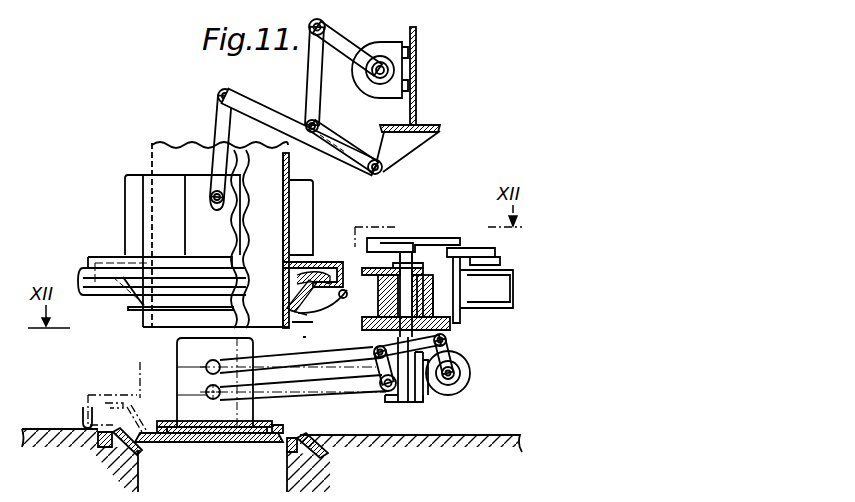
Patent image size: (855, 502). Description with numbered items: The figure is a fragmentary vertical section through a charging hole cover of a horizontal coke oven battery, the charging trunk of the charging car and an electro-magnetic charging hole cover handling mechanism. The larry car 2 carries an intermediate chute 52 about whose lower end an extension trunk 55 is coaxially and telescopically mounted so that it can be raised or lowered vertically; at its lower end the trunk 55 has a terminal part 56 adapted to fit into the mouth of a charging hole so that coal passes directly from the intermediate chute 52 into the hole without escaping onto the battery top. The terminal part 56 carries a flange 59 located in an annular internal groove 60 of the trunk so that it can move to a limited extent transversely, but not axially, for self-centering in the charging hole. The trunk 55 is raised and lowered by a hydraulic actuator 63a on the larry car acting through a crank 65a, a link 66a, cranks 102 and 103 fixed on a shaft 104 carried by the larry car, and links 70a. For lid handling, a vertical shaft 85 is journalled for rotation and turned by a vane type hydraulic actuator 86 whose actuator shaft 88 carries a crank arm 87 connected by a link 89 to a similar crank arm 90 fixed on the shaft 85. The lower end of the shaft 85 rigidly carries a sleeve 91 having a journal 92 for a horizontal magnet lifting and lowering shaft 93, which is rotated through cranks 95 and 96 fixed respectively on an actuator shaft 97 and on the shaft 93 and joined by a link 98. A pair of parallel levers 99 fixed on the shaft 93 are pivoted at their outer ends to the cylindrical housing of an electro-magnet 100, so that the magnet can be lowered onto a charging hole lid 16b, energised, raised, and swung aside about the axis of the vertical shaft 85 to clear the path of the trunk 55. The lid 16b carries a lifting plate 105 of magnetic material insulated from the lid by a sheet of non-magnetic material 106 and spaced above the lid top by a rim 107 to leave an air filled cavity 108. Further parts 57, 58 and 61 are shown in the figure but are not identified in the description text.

The larry car 2 is at (417, 101).
The intermediate chute 52 is at (289, 167).
The extension trunk 55 is at (125, 207).
The terminal part 56 is at (319, 314).
The roller 57 is at (348, 296).
The stop 58 is at (82, 423).
The flange 59 is at (300, 290).
The annular internal groove 60 is at (297, 277).
The plate 61 is at (105, 397).
The hydraulic actuator 63a is at (395, 42).
The crank 65a is at (346, 43).
The link 66a is at (306, 61).
The links 70a is at (220, 108).
The vertical shaft 85 is at (448, 328).
The vane type hydraulic actuator 86 is at (498, 298).
The crank arm 87 is at (463, 248).
The actuator shaft 88 is at (500, 259).
The link 89 is at (423, 238).
The crank arm 90 is at (384, 243).
The sleeve 91 is at (413, 393).
The journal 92 is at (389, 393).
The magnet lifting and lowering horizontal shaft 93 is at (428, 382).
The crank 95 is at (452, 345).
The crank 96 is at (378, 371).
The actuator shaft 97 is at (456, 380).
The link 98 is at (373, 350).
The parallel levers 99 is at (331, 394).
The electro-magnet 100 is at (242, 417).
The crank 102 is at (333, 130).
The crank 103 is at (271, 118).
The shaft 104 is at (371, 176).
The lifting plate 105 is at (172, 423).
The sheet of non-magnetic material 106 is at (270, 443).
The rim 107 is at (162, 436).
The air filled cavity 108 is at (214, 428).
The charging hole lid 16b is at (250, 432).